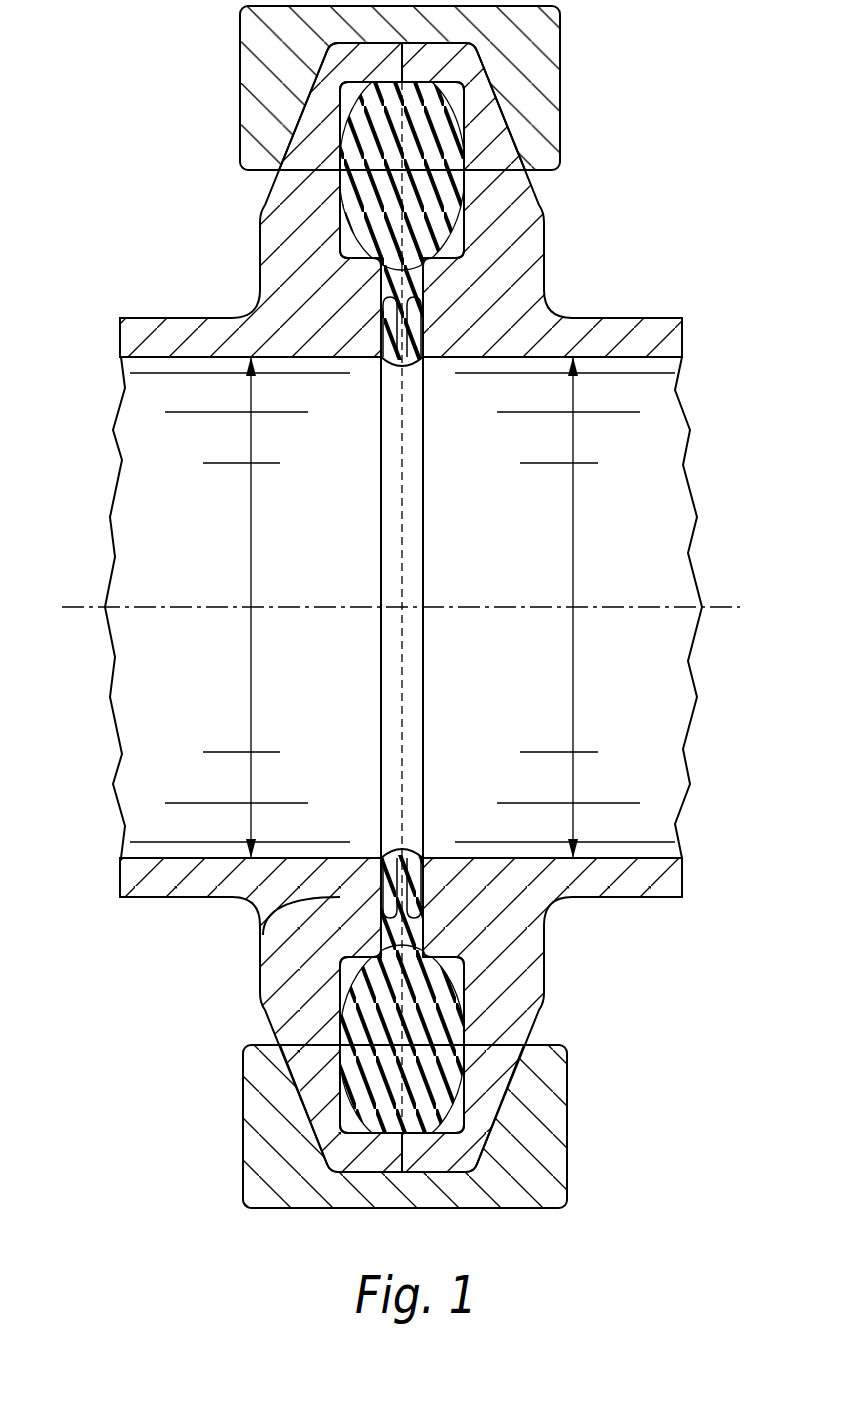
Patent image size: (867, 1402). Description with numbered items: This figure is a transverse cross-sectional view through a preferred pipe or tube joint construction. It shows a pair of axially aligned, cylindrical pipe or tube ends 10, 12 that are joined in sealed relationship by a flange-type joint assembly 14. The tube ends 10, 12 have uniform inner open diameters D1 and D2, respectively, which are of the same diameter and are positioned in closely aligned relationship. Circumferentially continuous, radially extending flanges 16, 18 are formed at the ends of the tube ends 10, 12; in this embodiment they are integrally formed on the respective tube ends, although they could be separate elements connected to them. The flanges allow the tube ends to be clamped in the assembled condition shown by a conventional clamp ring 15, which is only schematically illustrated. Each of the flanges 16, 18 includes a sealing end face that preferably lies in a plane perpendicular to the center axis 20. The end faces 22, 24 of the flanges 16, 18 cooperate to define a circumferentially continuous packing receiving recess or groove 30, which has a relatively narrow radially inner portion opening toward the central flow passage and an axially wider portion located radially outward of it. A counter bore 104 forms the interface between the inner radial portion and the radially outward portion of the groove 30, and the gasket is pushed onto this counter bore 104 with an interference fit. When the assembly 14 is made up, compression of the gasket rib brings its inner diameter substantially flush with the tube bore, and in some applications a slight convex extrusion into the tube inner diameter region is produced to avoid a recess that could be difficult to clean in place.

The tube end 10 is at (105, 392).
The tube end 12 is at (698, 390).
The flange-type joint assembly 14 is at (648, 200).
The clamp ring 15 is at (253, 1120).
The flange 16 is at (288, 254).
The flange 18 is at (505, 262).
The center axis 20 is at (718, 607).
The end face 22 is at (385, 368).
The end face 24 is at (419, 368).
The packing receiving groove 30 is at (425, 190).
The counter bore 104 is at (373, 950).
The inner open diameter D1 is at (251, 555).
The inner open diameter D2 is at (573, 555).